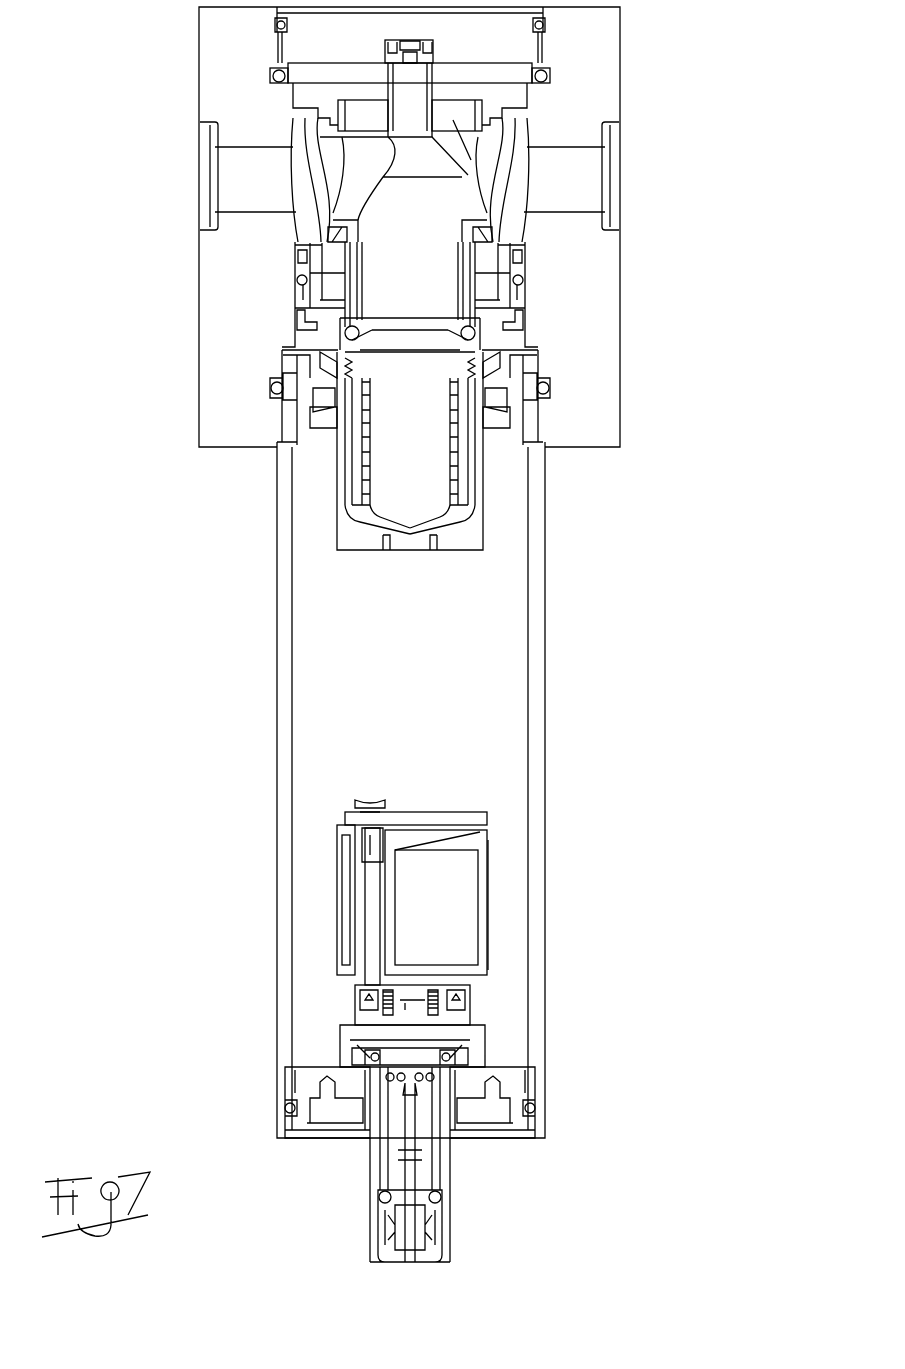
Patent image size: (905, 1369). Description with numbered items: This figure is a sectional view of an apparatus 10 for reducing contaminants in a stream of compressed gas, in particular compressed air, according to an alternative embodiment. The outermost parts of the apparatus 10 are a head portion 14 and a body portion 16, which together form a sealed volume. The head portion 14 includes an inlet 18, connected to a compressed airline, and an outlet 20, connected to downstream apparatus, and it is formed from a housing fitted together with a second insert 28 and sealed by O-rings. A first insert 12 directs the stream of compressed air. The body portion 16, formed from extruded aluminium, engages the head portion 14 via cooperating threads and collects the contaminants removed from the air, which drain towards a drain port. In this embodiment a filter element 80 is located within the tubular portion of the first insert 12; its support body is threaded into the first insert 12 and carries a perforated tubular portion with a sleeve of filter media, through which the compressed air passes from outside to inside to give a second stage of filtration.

The apparatus 10 is at (620, 562).
The first insert 12 is at (312, 406).
The head portion 14 is at (220, 282).
The body portion 16 is at (288, 822).
The inlet 18 is at (588, 186).
The outlet 20 is at (230, 178).
The second insert 28 is at (440, 264).
The filter element 80 is at (393, 543).